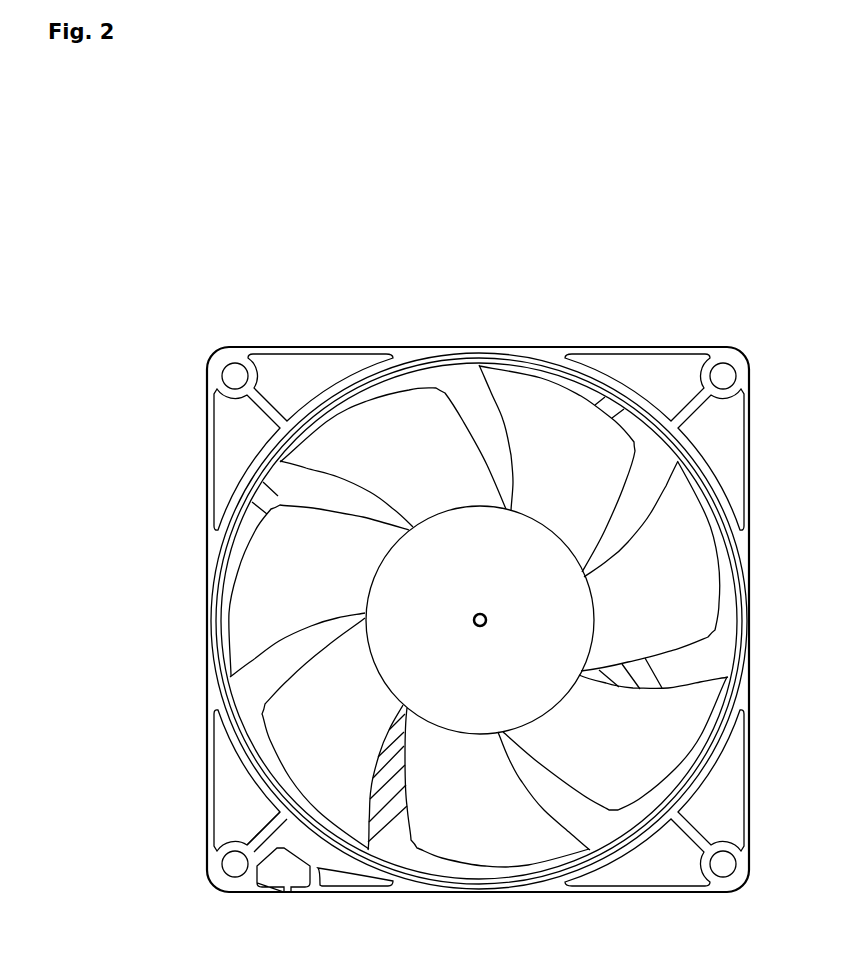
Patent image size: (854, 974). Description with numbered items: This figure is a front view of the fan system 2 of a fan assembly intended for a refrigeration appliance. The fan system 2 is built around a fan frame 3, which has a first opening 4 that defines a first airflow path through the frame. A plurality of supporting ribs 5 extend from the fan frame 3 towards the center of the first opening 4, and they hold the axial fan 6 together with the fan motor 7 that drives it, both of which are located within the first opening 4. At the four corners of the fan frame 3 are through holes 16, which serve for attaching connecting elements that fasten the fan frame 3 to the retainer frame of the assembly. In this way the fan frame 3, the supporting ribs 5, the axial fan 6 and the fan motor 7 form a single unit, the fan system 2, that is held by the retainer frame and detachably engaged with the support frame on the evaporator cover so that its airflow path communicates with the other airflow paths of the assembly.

The fan system 2 is at (477, 236).
The fan frame 3 is at (290, 349).
The first opening 4 is at (476, 401).
The supporting ribs 5 is at (604, 400).
The axial fan 6 is at (361, 689).
The fan motor 7 is at (518, 566).
The through holes 16 is at (228, 371).